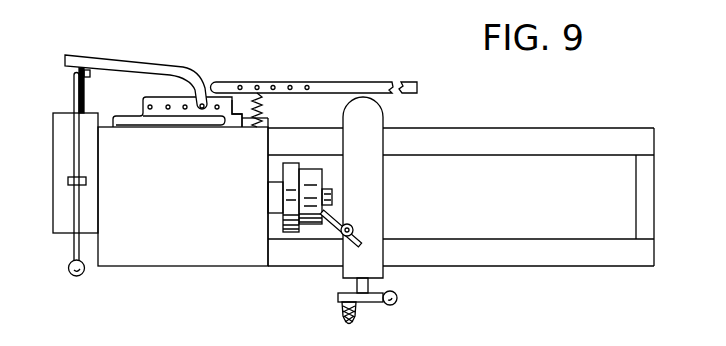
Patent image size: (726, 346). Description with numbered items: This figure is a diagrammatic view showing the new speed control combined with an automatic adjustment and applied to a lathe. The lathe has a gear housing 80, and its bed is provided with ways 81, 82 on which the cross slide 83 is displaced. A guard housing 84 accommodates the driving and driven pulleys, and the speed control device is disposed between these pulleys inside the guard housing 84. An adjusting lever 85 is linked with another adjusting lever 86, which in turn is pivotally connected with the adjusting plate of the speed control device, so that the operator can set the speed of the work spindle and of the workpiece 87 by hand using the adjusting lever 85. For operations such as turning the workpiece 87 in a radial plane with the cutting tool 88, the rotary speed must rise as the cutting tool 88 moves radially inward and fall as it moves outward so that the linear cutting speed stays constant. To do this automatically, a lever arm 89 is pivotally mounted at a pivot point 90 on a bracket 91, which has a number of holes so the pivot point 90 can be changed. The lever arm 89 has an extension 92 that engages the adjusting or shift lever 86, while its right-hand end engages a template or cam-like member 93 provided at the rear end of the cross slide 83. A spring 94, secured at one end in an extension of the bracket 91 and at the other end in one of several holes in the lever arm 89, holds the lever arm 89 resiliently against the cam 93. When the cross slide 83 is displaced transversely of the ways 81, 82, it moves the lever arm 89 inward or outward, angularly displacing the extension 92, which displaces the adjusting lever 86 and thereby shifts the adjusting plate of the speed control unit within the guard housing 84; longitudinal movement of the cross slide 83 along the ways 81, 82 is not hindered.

The gear housing 80 is at (183, 217).
The way of the lathe bed 81 is at (461, 197).
The way of the lathe bed 82 is at (448, 192).
The cross slide 83 is at (381, 210).
The guard housing 84 is at (51, 187).
The adjusting lever 85 is at (48, 175).
The adjusting lever 86 is at (107, 89).
The workpiece 87 is at (303, 229).
The cutting tool 88 is at (333, 221).
The lever arm 89 is at (304, 67).
The pivot point 90 is at (181, 84).
The bracket 91 is at (241, 130).
The extension 92 is at (136, 65).
The template or cam-like member 93 is at (383, 102).
The spring 94 is at (286, 110).